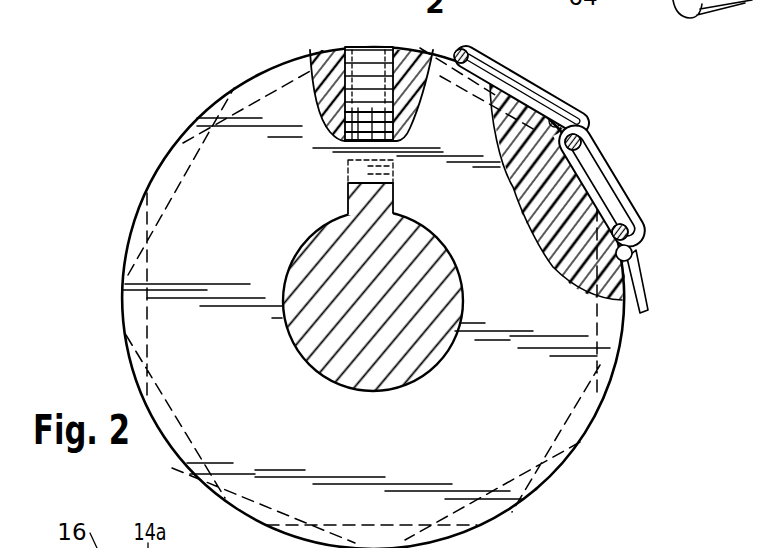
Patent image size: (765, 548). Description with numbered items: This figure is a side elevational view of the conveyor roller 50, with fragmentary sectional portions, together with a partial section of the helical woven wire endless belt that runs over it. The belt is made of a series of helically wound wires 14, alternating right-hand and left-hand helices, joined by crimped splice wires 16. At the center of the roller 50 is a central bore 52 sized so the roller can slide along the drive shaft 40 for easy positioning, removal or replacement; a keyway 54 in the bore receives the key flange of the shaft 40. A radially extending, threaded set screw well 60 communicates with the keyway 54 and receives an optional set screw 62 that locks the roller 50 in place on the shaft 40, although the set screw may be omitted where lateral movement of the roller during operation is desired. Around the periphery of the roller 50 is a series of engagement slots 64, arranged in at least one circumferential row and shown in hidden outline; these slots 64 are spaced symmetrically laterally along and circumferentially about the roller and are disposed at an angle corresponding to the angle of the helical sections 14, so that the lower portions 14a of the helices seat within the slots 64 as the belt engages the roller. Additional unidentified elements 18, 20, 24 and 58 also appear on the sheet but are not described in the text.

The helical wire 14 is at (622, 173).
The lower portion 14a is at (498, 55).
The splice wire 16 is at (627, 229).
The knob 18 is at (727, 16).
The shaft 20 is at (617, 0).
The collar 24 is at (690, 18).
The drive shaft 40 is at (268, 0).
The roller 50 is at (576, 443).
The central bore 52 is at (293, 279).
The keyway 54 is at (348, 195).
The outer surface 58 is at (594, 416).
The set screw well 60 is at (340, 107).
The set screw 62 is at (343, 115).
The engagement slot 64 is at (150, 388).